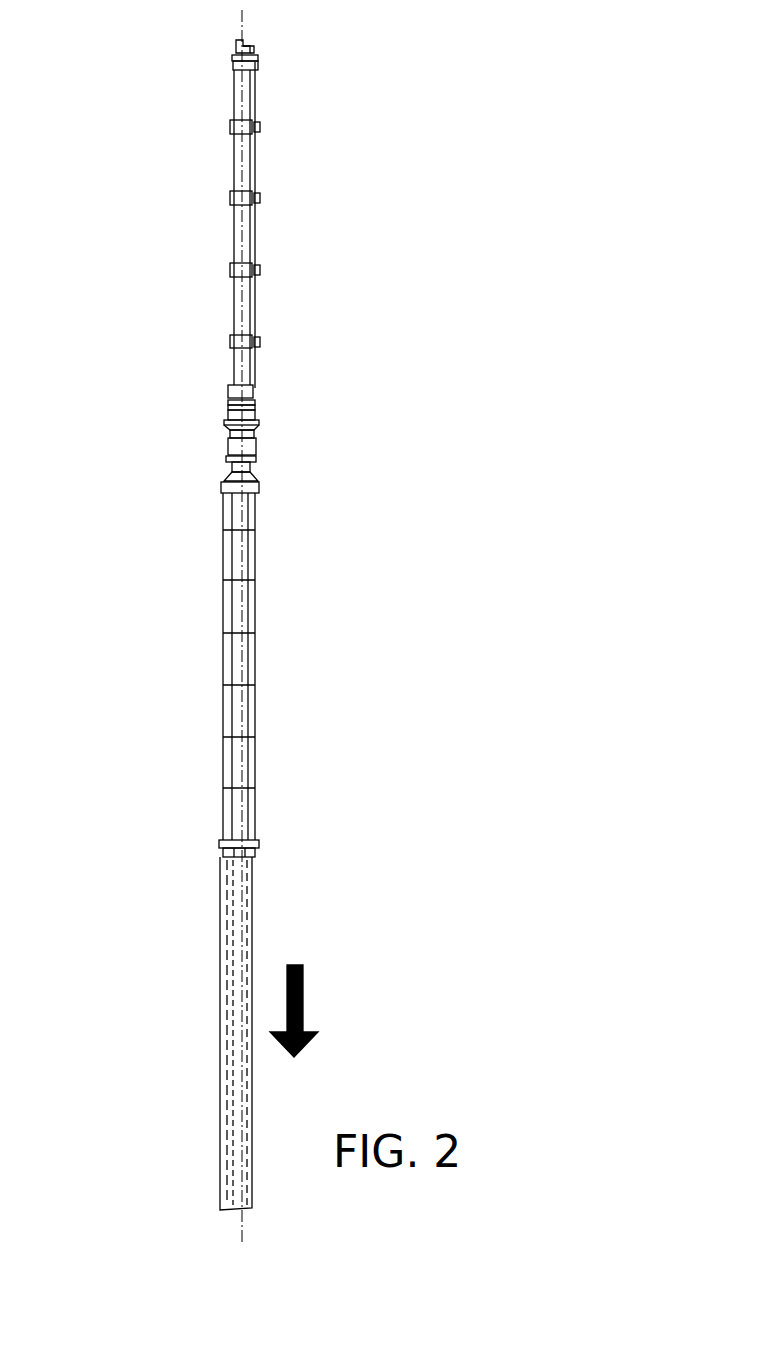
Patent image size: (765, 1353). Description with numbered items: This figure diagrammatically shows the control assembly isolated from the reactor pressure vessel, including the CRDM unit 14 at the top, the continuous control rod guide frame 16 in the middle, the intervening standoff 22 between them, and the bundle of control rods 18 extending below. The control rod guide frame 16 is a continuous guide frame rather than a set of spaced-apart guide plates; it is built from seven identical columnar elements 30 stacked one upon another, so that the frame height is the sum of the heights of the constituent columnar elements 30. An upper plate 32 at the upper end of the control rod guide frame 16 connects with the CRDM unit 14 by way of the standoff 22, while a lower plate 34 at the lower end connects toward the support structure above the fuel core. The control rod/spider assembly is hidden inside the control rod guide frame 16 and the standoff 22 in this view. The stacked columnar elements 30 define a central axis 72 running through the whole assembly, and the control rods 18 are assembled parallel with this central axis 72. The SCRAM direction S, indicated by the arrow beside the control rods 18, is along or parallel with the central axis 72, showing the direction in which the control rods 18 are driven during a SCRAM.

The central axis 72 is at (243, 23).
The CRDM unit 14 is at (218, 30).
The standoff 22 is at (259, 471).
The upper plate 32 is at (229, 474).
The columnar element 30 is at (223, 510).
The control rod guide frame 16 is at (258, 478).
The lower plate 34 is at (224, 860).
The control rods 18 is at (205, 847).
The SCRAM direction S is at (303, 982).